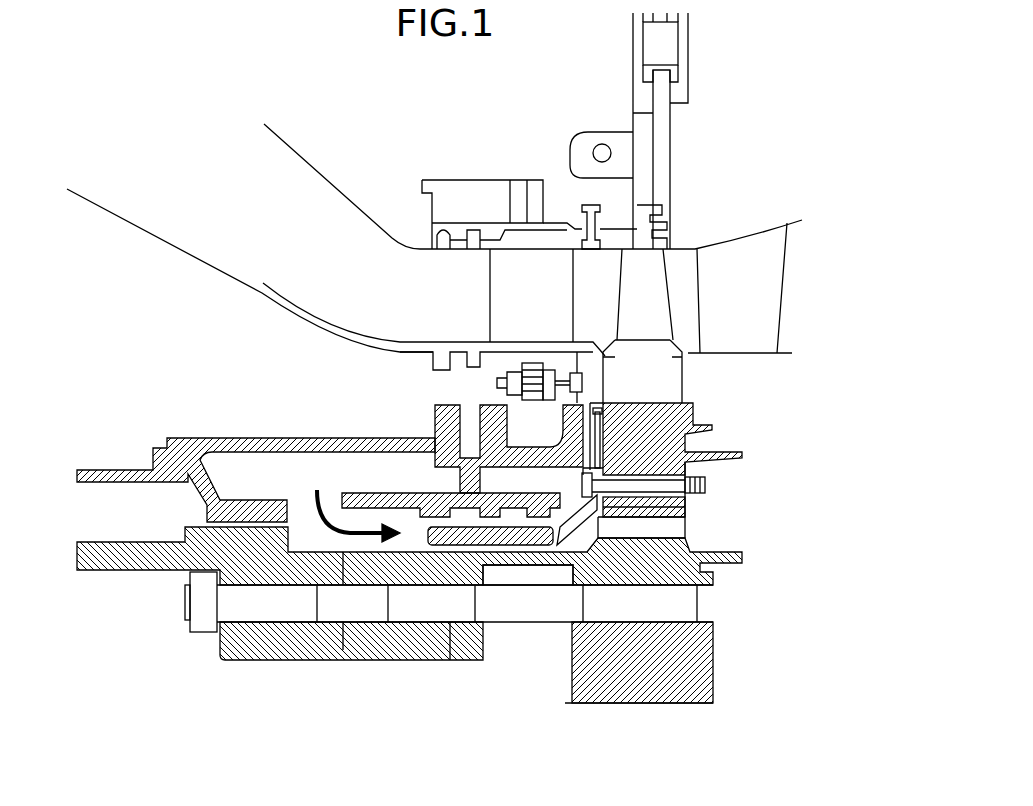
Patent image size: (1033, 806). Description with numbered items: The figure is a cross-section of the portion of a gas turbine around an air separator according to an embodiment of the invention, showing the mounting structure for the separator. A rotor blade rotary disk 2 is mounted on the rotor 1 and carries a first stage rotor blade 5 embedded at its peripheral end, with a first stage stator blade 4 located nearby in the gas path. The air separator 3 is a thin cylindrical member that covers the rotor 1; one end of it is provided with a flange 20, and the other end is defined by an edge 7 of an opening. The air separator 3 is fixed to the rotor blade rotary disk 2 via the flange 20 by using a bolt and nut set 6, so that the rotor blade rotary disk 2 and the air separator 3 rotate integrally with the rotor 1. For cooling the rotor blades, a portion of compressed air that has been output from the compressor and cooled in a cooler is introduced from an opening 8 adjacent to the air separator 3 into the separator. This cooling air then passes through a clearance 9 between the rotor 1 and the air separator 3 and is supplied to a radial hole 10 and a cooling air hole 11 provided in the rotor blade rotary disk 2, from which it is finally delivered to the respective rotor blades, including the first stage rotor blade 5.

The rotor 1 is at (115, 570).
The rotor blade rotary disk 2 is at (618, 583).
The air separator 3 is at (447, 545).
The first stage stator blade 4 is at (505, 283).
The first stage rotor blade 5 is at (631, 278).
The bolt and nut set 6 is at (705, 487).
The edge of opening 7 is at (413, 533).
The opening 8 is at (307, 522).
The clearance 9 is at (522, 548).
The radial hole 10 is at (617, 423).
The cooling air hole 11 is at (675, 528).
The flange 20 is at (598, 500).